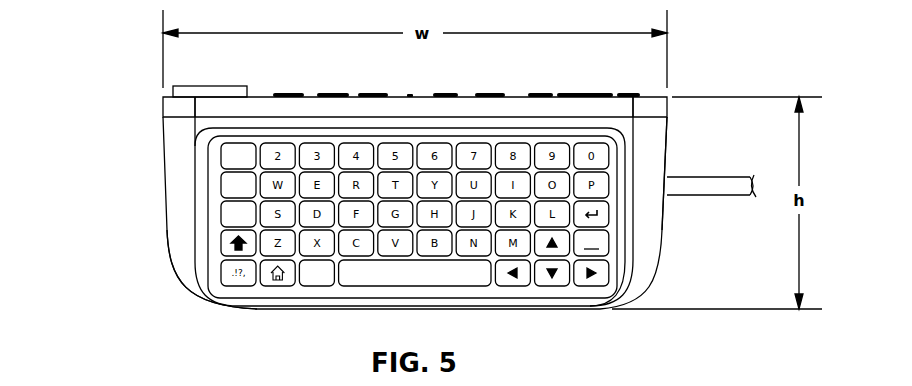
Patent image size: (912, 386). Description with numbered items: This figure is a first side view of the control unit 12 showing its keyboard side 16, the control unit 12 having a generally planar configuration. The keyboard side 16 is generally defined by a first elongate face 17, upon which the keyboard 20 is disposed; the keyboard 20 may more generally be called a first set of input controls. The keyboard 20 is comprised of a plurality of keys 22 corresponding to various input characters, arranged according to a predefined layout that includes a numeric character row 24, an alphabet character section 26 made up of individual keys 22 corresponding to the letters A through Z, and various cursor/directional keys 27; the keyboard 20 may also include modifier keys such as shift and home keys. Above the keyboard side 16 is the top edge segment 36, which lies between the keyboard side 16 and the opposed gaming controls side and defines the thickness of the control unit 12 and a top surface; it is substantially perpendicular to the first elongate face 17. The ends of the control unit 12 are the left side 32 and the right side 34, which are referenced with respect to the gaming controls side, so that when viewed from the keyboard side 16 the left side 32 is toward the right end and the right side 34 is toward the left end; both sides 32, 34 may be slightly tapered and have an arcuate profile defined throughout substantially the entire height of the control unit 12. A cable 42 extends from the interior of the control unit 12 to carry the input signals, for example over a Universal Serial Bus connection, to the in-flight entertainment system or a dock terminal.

The control unit 12 is at (563, 308).
The keyboard side 16 is at (175, 292).
The first elongate face 17 is at (447, 133).
The keyboard 20 is at (613, 233).
The keys 22 is at (219, 213).
The numeric character row 24 is at (203, 157).
The alphabet character section 26 is at (202, 188).
The cursor/directional keys 27 is at (518, 303).
The left side 32 is at (680, 128).
The right side 34 is at (140, 106).
The top edge segment 36 is at (548, 86).
The cable 42 is at (695, 177).